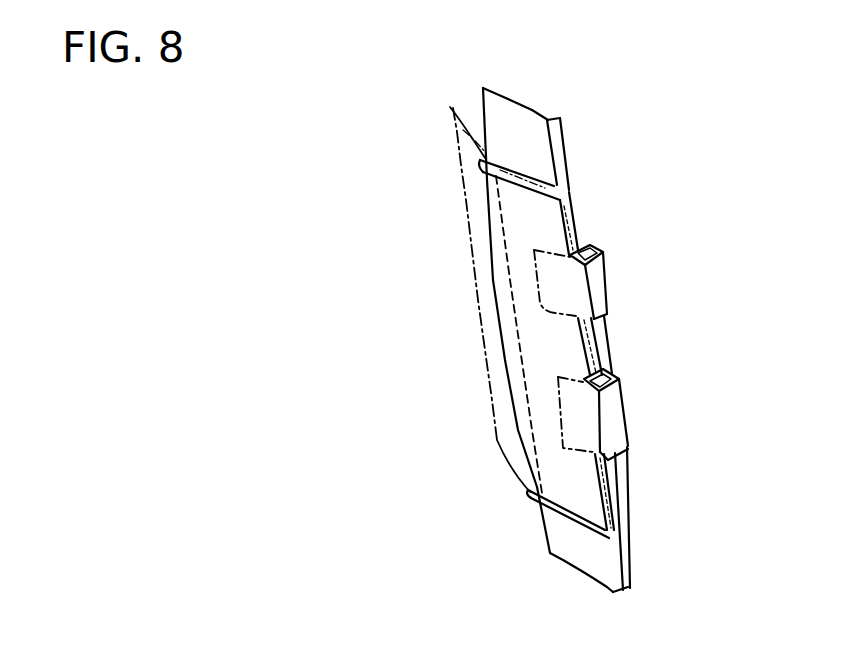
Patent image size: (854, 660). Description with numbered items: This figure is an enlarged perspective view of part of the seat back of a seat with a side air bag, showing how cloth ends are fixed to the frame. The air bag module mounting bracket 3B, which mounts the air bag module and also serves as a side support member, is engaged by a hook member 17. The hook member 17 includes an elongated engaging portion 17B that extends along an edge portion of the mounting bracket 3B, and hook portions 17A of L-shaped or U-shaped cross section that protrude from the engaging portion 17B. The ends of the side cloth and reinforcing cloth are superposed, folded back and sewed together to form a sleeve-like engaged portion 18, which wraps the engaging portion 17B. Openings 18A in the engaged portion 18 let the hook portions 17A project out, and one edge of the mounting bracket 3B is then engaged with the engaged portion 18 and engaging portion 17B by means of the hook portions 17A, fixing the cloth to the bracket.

The air bag module mounting bracket 3B is at (532, 142).
The hook member 17 is at (631, 329).
The hook portions 17A is at (600, 267).
The engaging portion 17B is at (545, 207).
The engaged portion 18 is at (483, 363).
The openings 18A is at (534, 256).